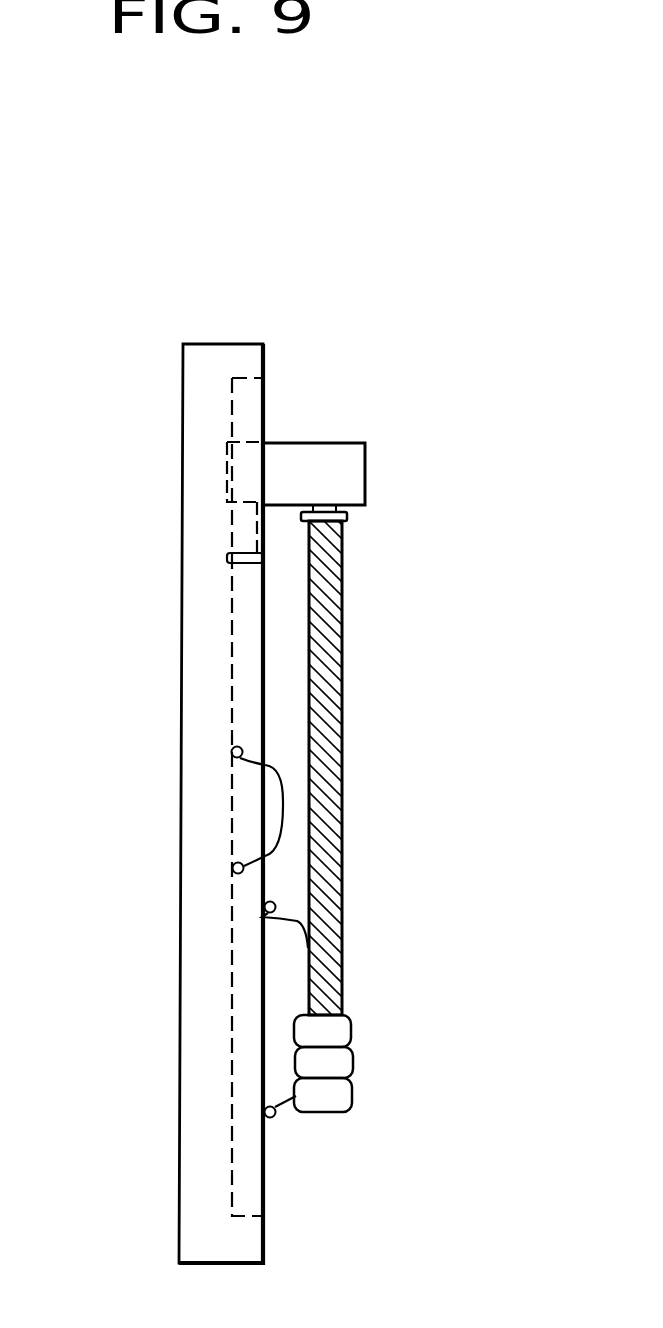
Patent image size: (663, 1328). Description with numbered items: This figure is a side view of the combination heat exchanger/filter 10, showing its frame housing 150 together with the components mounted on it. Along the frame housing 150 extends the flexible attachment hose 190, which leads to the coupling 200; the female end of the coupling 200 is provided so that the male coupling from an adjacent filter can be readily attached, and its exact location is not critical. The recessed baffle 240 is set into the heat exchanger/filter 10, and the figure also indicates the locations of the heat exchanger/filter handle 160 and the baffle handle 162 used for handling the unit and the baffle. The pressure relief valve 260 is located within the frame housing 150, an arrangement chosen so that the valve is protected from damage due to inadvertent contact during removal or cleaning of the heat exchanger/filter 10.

The heat exchanger/filter 10 is at (180, 845).
The frame housing 150 is at (265, 344).
The heat exchanger/filter handle 160 is at (278, 1118).
The baffle handle 162 is at (283, 803).
The flexible attachment hose 190 is at (345, 715).
The coupling 200 is at (360, 1063).
The recessed baffle 240 is at (243, 1190).
The pressure relief valve 260 is at (228, 564).